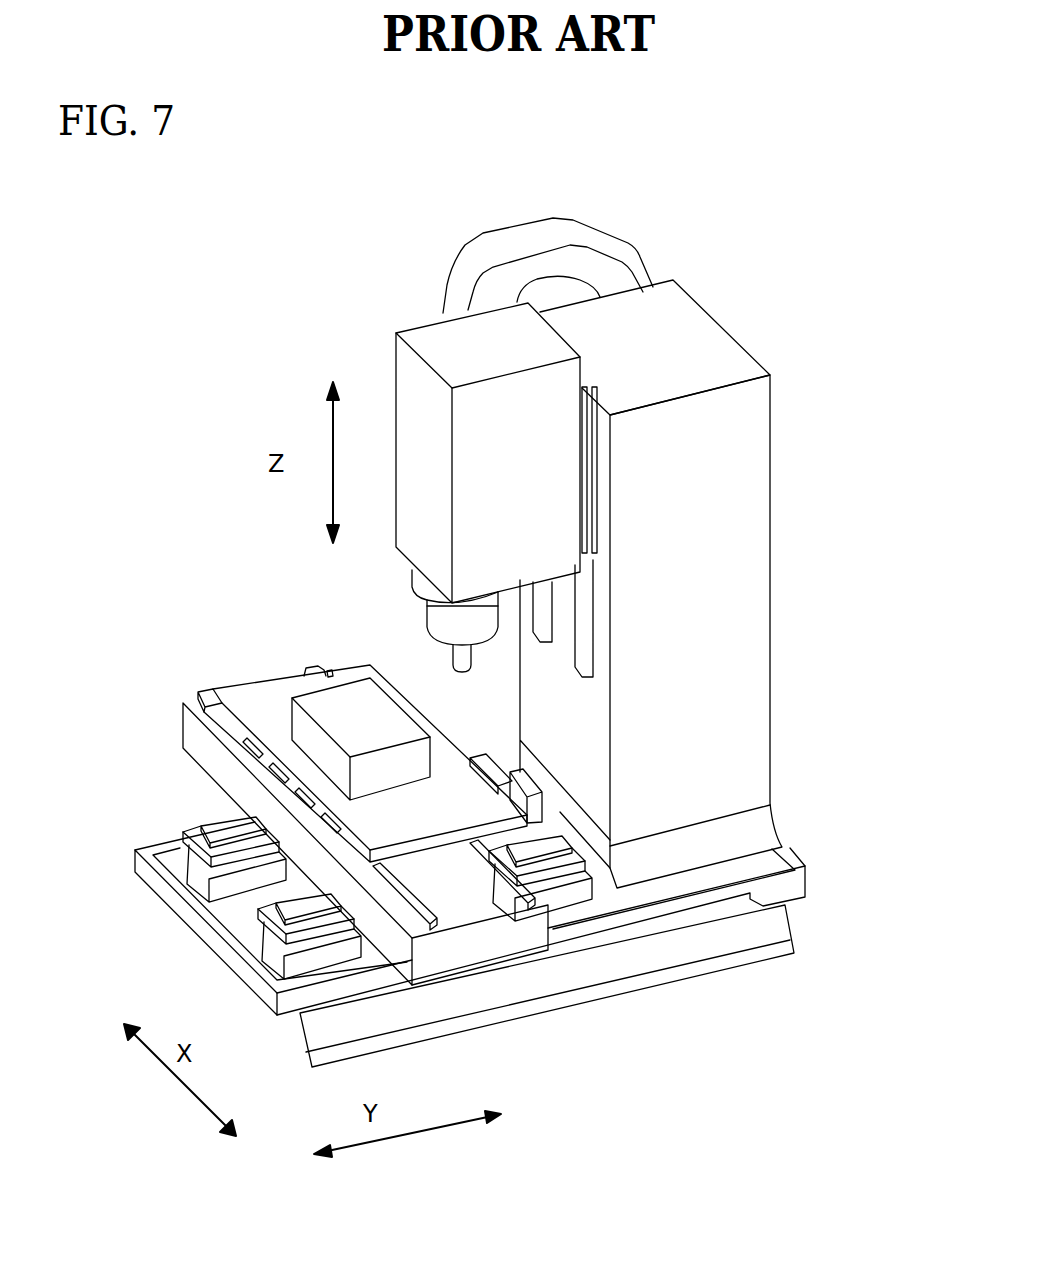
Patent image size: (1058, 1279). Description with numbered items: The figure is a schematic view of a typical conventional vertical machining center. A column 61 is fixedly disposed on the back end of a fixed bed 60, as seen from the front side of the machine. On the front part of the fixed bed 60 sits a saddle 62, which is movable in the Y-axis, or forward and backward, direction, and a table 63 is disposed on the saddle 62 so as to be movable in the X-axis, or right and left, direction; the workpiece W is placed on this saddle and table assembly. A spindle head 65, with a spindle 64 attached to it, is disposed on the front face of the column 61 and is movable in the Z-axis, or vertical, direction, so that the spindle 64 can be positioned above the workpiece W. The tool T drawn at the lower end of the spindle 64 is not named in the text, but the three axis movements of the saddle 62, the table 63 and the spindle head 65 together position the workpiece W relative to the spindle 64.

The fixed bed 60 is at (617, 992).
The column 61 is at (702, 309).
The saddle 62 is at (485, 953).
The table 63 is at (263, 697).
The spindle 64 is at (437, 618).
The spindle head 65 is at (440, 323).
The workpiece W is at (363, 693).
The tool T is at (450, 660).